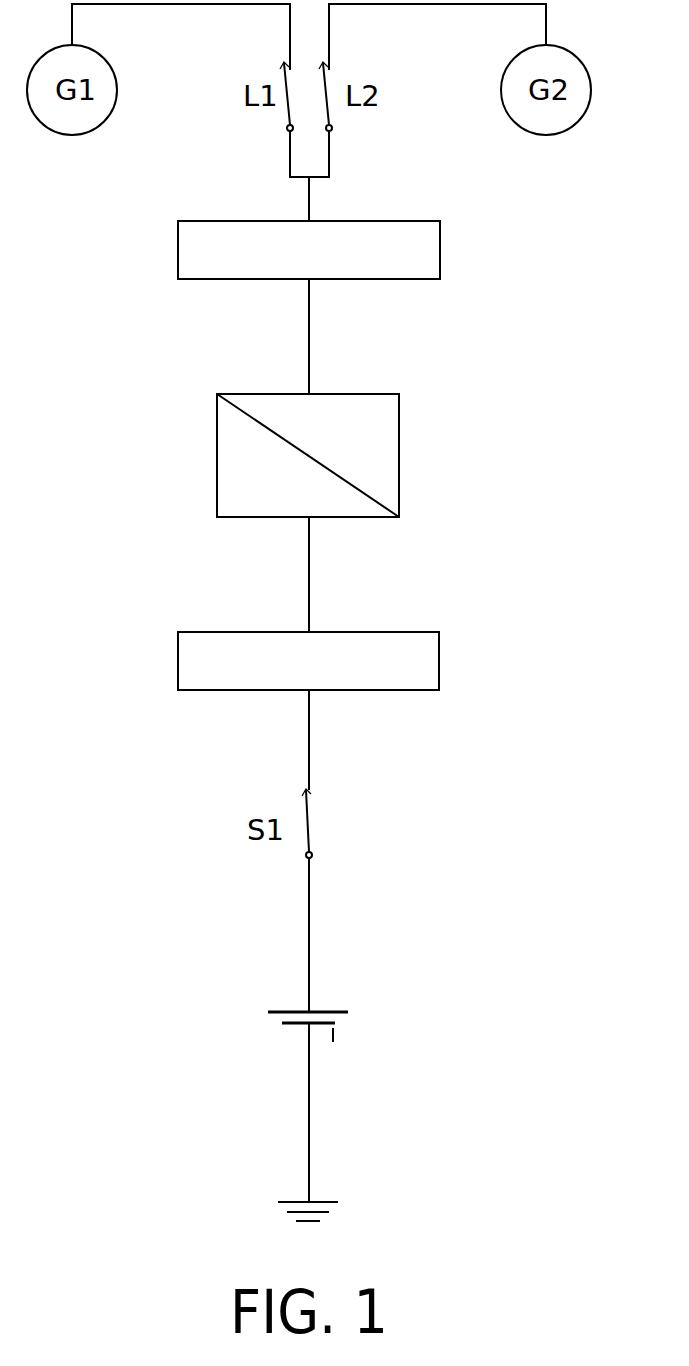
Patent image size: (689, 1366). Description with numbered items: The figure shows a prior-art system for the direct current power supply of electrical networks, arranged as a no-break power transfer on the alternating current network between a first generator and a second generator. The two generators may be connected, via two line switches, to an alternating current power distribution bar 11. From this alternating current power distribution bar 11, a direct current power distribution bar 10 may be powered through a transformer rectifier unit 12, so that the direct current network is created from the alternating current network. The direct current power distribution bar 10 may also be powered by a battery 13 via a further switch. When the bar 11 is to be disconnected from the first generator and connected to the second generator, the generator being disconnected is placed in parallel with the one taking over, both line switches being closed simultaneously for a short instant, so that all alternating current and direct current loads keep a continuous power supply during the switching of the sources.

The direct current power distribution bar 10 is at (430, 663).
The alternating current power distribution bar 11 is at (192, 248).
The transformer rectifier unit 12 is at (387, 462).
The battery 13 is at (343, 1018).